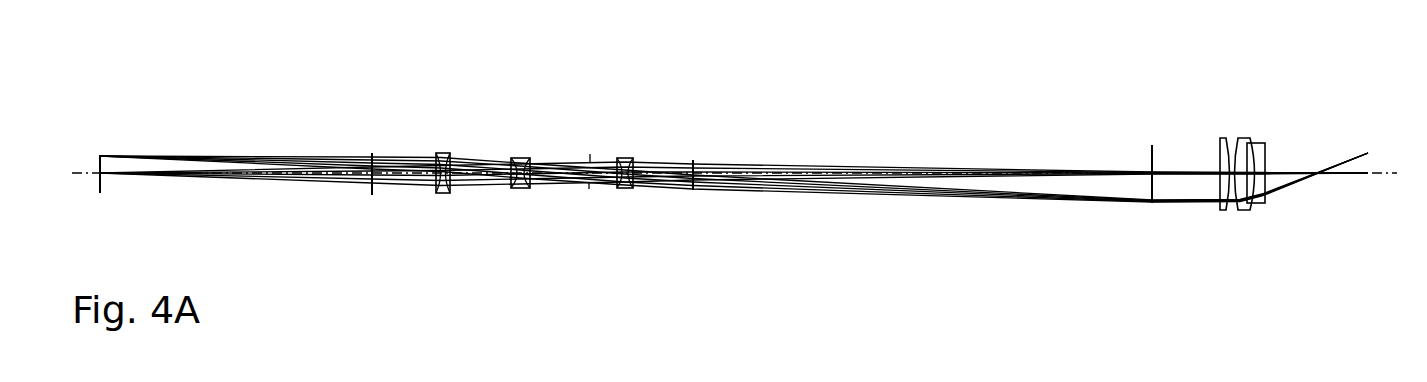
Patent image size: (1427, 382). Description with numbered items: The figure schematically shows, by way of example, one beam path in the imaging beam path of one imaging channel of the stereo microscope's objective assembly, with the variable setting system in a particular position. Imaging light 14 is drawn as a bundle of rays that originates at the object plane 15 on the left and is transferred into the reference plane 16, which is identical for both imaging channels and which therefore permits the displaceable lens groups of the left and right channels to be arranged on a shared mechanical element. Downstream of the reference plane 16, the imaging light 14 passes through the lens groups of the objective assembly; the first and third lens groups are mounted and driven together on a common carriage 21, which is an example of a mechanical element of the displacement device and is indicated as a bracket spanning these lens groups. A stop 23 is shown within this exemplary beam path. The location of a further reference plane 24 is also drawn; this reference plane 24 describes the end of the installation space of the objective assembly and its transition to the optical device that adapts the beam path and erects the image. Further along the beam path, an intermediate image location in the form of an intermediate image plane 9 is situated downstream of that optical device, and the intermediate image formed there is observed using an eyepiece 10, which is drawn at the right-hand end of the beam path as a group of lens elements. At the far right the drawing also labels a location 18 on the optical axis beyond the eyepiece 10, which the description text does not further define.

The intermediate image plane 9 is at (1154, 153).
The eyepiece 10 is at (1245, 125).
The imaging light 14 is at (248, 143).
The object plane 15 is at (99, 166).
The reference plane 16 is at (372, 153).
The optical axis / exit pupil 18 is at (1395, 172).
The common carriage 21 is at (632, 157).
The stop 23 is at (588, 187).
The further reference plane 24 is at (694, 160).